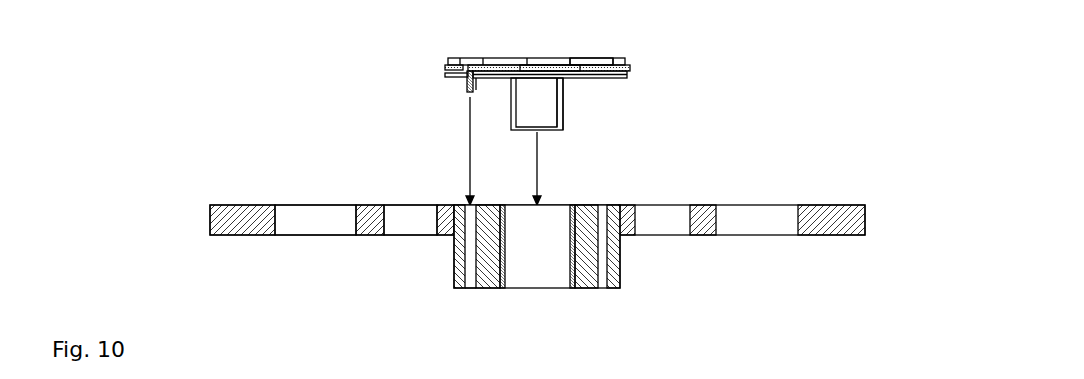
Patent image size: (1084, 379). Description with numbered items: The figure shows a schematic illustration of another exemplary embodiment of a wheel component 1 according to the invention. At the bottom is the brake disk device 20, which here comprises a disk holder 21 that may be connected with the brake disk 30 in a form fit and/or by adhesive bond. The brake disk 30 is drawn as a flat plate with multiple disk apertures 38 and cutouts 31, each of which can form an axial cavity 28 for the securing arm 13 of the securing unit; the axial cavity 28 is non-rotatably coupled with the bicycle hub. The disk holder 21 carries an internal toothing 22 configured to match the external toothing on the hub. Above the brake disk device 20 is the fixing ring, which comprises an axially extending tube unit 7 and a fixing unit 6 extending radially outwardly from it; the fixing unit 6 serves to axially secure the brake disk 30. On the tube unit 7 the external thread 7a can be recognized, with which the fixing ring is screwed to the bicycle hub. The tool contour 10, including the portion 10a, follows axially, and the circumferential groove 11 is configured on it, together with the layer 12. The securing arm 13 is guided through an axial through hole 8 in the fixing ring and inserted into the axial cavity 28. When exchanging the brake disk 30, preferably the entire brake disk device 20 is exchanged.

The wheel component 1 is at (633, 110).
The fixing unit 6 is at (618, 77).
The tube unit 7 is at (557, 115).
The thread 7a is at (568, 95).
The axial through hole 8 is at (473, 90).
The tool contour 10 is at (625, 58).
The top plate segment 10a is at (593, 61).
The circumferential groove 11 is at (543, 67).
The circuit layer 12 is at (512, 67).
The securing arm 13 is at (467, 82).
The brake disk device 20 is at (495, 233).
The disk holder 21 is at (460, 272).
The internal toothing 22 is at (572, 260).
The axial cavity 28 is at (472, 296).
The brake disk 30 is at (223, 221).
The cutout 31 is at (314, 217).
The disk aperture 38 is at (406, 217).